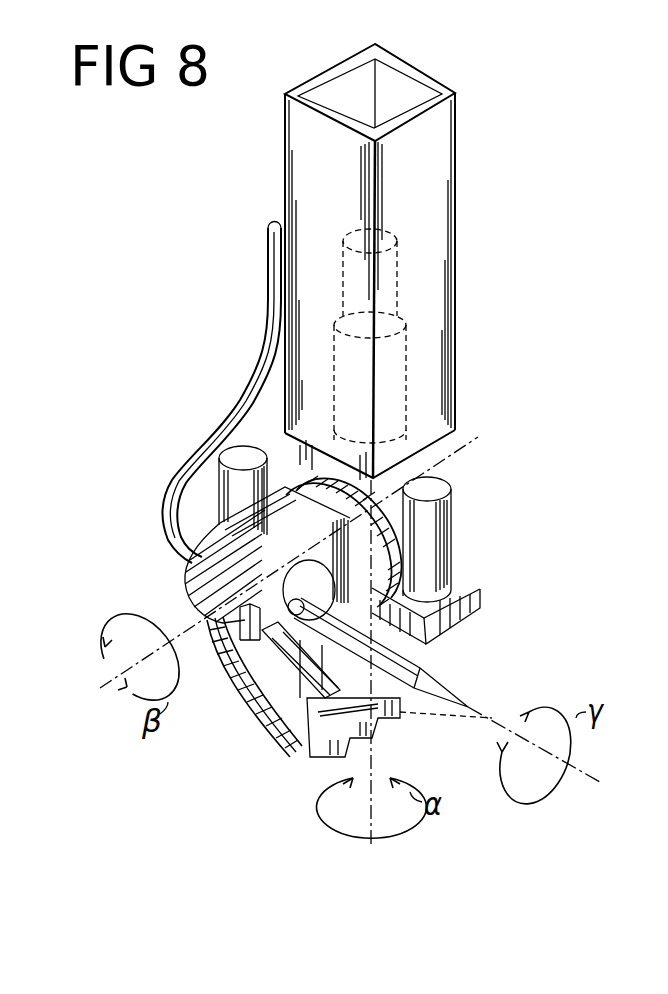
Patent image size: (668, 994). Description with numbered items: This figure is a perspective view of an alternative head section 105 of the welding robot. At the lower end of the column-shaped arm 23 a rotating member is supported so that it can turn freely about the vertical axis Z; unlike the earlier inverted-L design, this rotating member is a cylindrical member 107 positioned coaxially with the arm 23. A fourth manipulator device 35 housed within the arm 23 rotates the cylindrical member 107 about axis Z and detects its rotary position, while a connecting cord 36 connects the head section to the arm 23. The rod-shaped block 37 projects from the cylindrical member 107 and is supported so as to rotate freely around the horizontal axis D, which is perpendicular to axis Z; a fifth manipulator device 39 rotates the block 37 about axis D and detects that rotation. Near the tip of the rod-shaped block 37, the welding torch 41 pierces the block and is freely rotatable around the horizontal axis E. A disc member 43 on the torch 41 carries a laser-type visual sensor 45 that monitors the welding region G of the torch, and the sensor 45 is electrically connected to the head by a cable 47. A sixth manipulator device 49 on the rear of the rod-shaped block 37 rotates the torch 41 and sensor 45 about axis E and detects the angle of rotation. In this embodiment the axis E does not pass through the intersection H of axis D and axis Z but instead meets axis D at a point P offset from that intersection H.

The column-shaped arm 23 is at (458, 177).
The fourth manipulator device 35 is at (407, 336).
The connecting cord 36 is at (243, 402).
The rod-shaped block 37 is at (200, 564).
The fifth manipulator device 39 is at (245, 454).
The welding torch 41 is at (452, 694).
The disc member 43 is at (311, 660).
The laser-type visual sensor 45 is at (308, 757).
The cable 47 is at (257, 676).
The sixth manipulator device 49 is at (457, 505).
The head section 105 is at (529, 413).
The cylindrical member 107 is at (304, 548).
The horizontal axis D is at (103, 688).
The horizontal axis E is at (592, 770).
The welding region G is at (490, 719).
The intersection point H is at (395, 512).
The intersection point P is at (196, 580).
The vertical axis Z is at (378, 847).